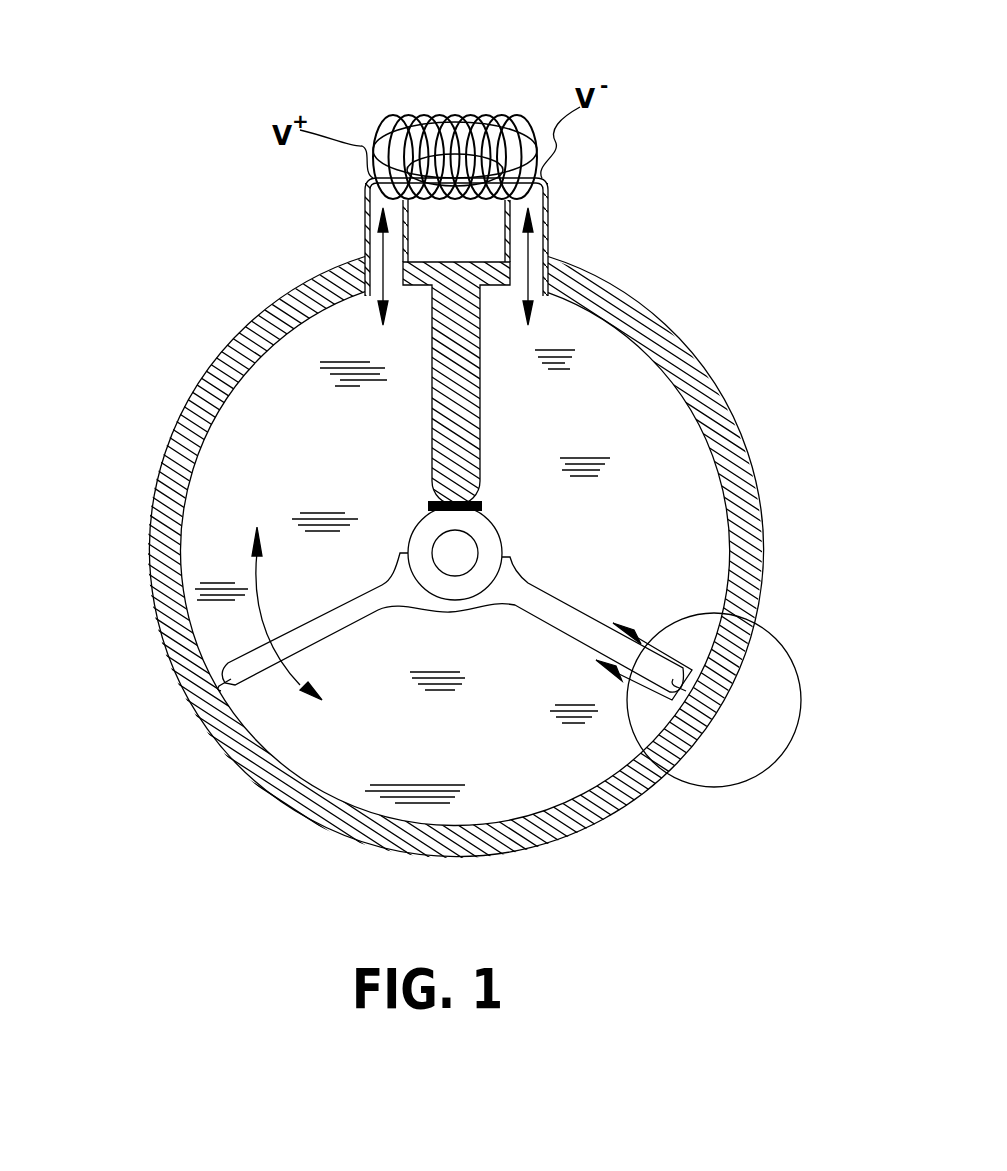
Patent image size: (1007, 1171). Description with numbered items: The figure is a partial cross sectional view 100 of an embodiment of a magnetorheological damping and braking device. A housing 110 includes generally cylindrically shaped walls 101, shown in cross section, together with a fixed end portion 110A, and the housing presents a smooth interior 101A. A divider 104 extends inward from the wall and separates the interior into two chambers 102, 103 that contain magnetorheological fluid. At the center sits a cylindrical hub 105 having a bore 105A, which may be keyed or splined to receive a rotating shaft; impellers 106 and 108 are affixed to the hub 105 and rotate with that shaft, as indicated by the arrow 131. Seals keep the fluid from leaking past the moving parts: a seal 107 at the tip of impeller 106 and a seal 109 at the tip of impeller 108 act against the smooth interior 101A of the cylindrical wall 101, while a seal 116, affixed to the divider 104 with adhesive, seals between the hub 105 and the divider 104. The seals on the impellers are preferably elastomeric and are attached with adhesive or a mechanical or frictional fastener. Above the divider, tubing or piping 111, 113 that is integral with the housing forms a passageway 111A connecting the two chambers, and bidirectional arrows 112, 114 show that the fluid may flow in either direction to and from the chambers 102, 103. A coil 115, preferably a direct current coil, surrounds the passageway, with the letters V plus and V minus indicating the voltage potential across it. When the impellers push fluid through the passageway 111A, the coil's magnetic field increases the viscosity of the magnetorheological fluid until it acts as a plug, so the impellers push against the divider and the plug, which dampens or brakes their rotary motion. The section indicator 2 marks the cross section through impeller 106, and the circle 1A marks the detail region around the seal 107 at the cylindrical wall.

The partial cross sectional view 100 is at (730, 390).
The cylindrically shaped walls 101 is at (740, 477).
The smooth interior 101A is at (727, 508).
The chamber 102 is at (645, 443).
The chamber 103 is at (243, 498).
The divider 104 is at (480, 445).
The hub 105 is at (477, 528).
The bore 105A is at (436, 548).
The impeller 106 is at (545, 608).
The seal 107 is at (700, 676).
The impeller 108 is at (268, 667).
The seal 109 is at (216, 683).
The housing 110 is at (133, 535).
The fixed end portion 110A is at (445, 658).
The tubing or piping 111 is at (548, 218).
The passageway 111A is at (540, 200).
The bidirectional arrow 112 is at (549, 255).
The tubing or piping 113 is at (364, 215).
The bidirectional arrow 114 is at (366, 251).
The coil 115 is at (480, 115).
The seal 116 is at (430, 507).
The arrow 131 is at (310, 626).
The section line 2- 2 is at (632, 648).
The detail view circle 1A is at (713, 787).